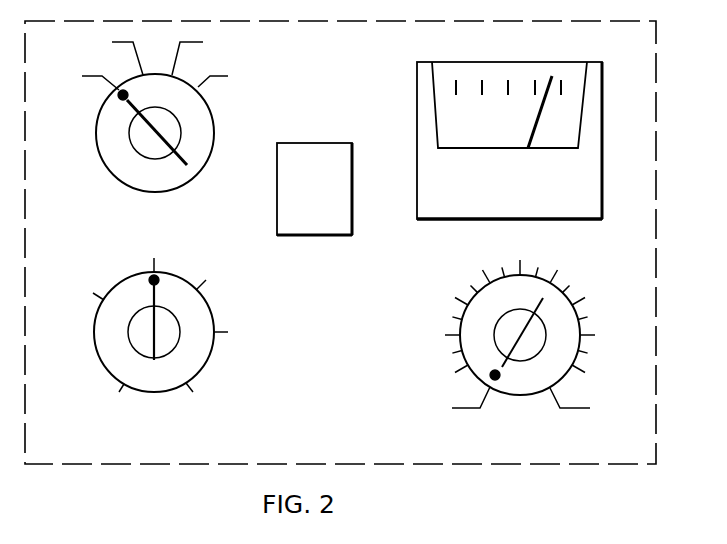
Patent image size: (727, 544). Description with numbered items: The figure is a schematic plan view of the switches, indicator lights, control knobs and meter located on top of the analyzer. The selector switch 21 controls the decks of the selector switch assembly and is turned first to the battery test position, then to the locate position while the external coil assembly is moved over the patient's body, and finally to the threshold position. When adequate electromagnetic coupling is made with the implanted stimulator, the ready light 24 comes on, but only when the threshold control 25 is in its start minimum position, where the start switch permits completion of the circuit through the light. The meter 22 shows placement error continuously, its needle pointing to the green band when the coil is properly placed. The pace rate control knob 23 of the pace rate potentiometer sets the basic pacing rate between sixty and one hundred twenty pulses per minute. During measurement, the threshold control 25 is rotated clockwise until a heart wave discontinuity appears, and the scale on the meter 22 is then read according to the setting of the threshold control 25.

The selector switch 21 is at (107, 170).
The meter 22 is at (418, 207).
The pace rate control knob 23 is at (122, 278).
The ready light 24 is at (300, 143).
The threshold control knob 25 is at (463, 358).